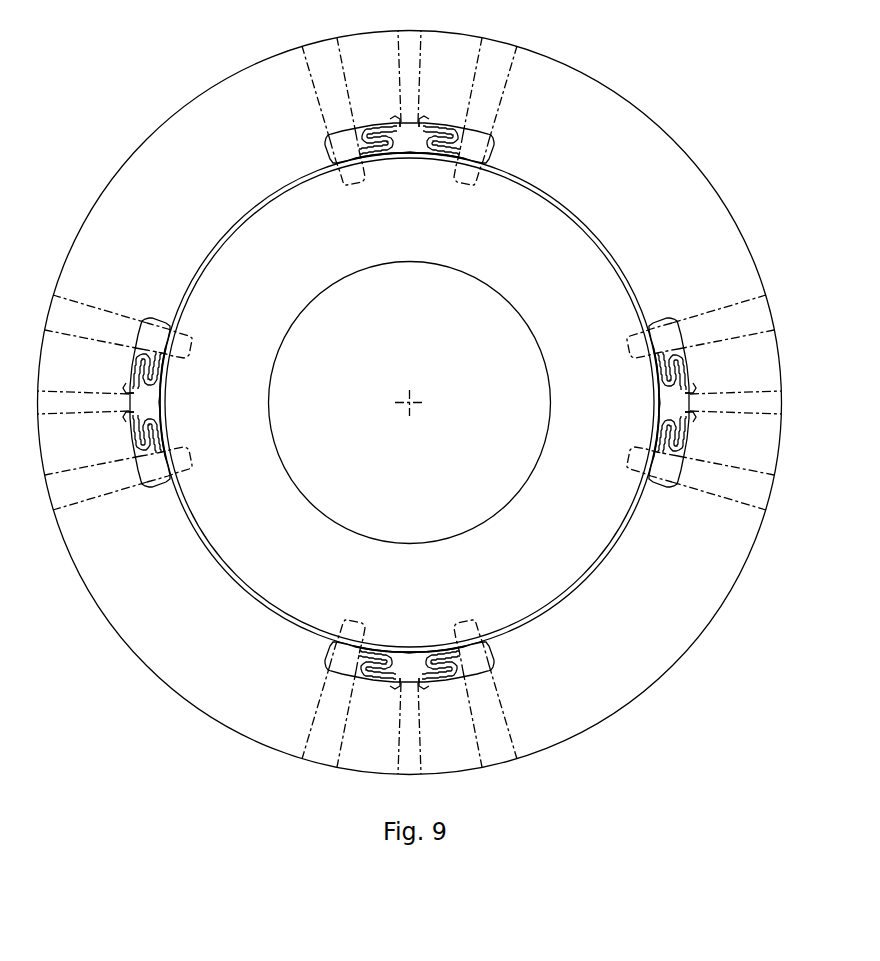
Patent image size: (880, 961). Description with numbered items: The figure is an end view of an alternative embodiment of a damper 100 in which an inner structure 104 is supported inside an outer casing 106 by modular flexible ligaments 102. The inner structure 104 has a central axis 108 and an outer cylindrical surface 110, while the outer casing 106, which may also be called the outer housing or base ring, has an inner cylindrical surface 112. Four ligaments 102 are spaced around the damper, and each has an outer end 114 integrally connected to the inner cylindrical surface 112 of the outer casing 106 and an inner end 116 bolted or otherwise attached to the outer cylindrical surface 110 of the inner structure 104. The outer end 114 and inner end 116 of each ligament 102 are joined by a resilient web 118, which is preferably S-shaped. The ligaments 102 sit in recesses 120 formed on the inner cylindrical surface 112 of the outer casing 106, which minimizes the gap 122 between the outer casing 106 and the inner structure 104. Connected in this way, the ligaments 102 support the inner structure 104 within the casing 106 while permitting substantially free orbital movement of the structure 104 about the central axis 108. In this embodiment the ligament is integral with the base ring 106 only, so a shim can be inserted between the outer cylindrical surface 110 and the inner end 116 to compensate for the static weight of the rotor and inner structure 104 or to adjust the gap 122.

The damper 100 is at (181, 703).
The modular flexible ligament 102 is at (378, 655).
The inner structure 104 is at (505, 503).
The outer casing 106 is at (678, 663).
The central axis 108 is at (412, 400).
The outer cylindrical surface 110 is at (637, 508).
The inner cylindrical surface 112 is at (613, 551).
The outer end 114 is at (421, 681).
The inner end 116 is at (456, 656).
The resilient web 118 is at (421, 663).
The recess 120 is at (495, 657).
The gap 122 is at (575, 592).